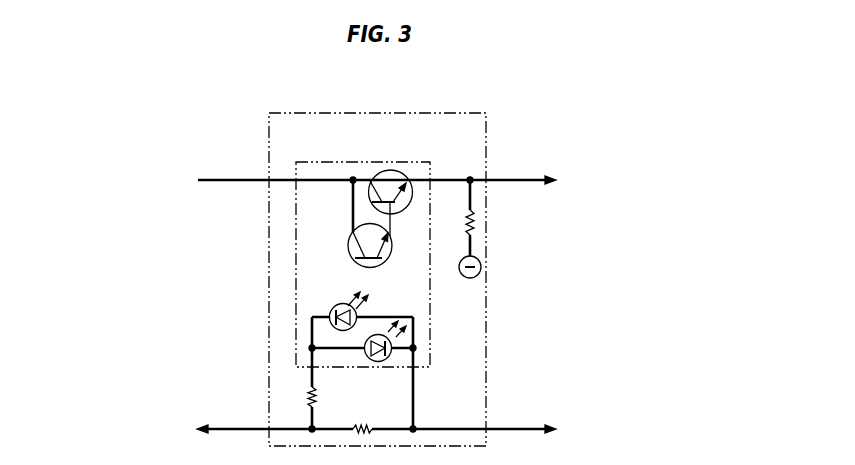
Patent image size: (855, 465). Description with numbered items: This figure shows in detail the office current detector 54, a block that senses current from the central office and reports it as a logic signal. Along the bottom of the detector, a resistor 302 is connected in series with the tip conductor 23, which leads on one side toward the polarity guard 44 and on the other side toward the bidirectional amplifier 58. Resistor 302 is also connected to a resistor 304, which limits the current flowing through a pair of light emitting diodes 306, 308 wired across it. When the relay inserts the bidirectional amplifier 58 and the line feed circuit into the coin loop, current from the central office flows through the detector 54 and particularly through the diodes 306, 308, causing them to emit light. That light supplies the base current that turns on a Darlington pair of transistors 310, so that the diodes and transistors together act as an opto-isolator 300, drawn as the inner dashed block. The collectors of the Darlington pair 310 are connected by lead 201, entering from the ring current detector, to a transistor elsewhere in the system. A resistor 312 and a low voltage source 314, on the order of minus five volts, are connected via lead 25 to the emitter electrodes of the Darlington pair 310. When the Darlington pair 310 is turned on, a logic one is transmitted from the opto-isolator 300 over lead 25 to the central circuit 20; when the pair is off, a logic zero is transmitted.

The office current detector 54 is at (278, 314).
The opto-isolator 300 is at (425, 164).
The lead 201 is at (231, 172).
The lead 25 is at (520, 179).
The central circuit 20 is at (641, 185).
The Darlington pair of transistors 310 is at (367, 219).
The resistor 312 is at (458, 218).
The low voltage source 314 is at (458, 267).
The light emitting diode 308 is at (342, 306).
The light emitting diode 306 is at (373, 345).
The resistor 304 is at (326, 407).
The resistor 302 is at (365, 416).
The tip conductor 23 is at (243, 425).
The polarity guard 44 is at (108, 425).
The bidirectional amplifier 58 is at (545, 433).